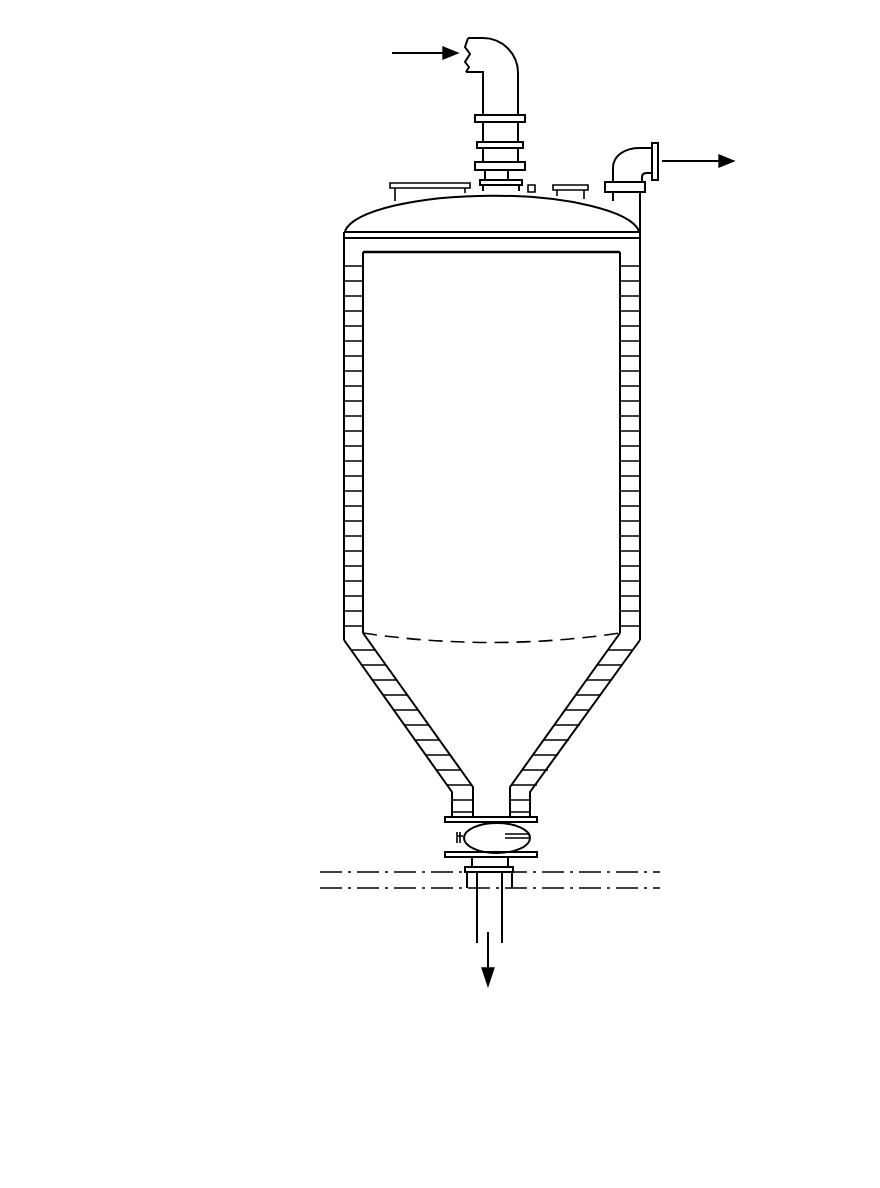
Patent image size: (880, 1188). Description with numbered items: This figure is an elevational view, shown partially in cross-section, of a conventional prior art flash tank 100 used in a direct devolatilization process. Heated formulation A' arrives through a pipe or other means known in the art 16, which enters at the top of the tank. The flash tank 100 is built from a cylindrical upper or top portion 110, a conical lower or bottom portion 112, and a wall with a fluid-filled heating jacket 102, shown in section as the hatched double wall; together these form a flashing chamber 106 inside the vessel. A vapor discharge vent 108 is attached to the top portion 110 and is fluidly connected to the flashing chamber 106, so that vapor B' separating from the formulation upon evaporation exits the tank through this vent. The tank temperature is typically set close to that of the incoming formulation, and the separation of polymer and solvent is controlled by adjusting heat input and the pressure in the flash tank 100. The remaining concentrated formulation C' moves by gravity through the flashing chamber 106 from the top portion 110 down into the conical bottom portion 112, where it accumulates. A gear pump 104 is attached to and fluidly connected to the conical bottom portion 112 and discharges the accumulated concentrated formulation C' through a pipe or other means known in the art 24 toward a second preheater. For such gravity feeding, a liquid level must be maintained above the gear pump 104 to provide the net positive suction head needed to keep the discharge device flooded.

The flash tank 100 is at (257, 122).
The pipe 16 is at (507, 47).
The vapor discharge vent 108 is at (610, 177).
The wall with fluid-filled heating jacket 102 is at (357, 397).
The flashing chamber 106 is at (367, 324).
The cylindrical upper or top portion 110 is at (640, 388).
The conical lower or bottom portion 112 is at (600, 697).
The gear pump 104 is at (528, 838).
The pipe 24 is at (500, 915).